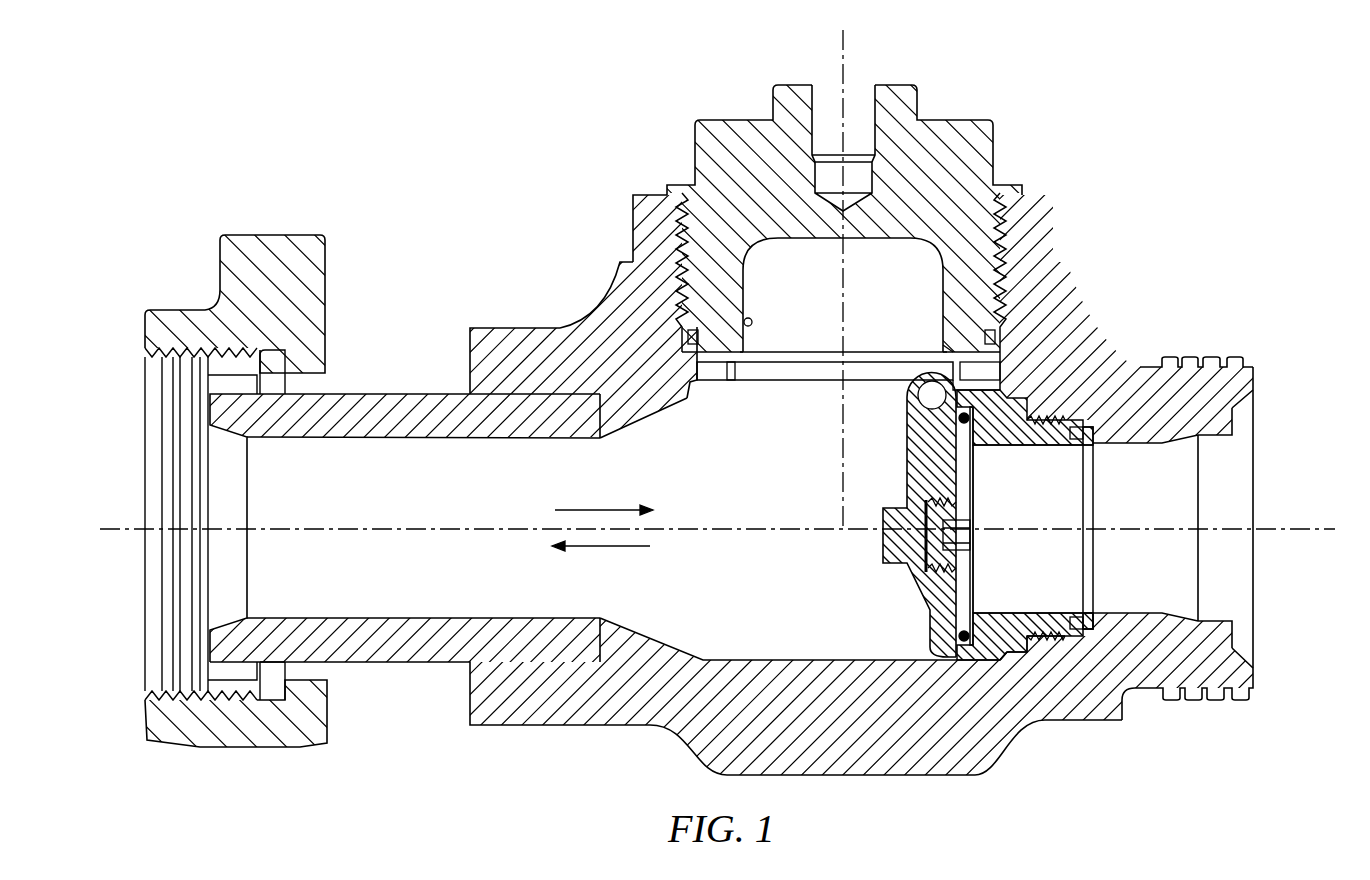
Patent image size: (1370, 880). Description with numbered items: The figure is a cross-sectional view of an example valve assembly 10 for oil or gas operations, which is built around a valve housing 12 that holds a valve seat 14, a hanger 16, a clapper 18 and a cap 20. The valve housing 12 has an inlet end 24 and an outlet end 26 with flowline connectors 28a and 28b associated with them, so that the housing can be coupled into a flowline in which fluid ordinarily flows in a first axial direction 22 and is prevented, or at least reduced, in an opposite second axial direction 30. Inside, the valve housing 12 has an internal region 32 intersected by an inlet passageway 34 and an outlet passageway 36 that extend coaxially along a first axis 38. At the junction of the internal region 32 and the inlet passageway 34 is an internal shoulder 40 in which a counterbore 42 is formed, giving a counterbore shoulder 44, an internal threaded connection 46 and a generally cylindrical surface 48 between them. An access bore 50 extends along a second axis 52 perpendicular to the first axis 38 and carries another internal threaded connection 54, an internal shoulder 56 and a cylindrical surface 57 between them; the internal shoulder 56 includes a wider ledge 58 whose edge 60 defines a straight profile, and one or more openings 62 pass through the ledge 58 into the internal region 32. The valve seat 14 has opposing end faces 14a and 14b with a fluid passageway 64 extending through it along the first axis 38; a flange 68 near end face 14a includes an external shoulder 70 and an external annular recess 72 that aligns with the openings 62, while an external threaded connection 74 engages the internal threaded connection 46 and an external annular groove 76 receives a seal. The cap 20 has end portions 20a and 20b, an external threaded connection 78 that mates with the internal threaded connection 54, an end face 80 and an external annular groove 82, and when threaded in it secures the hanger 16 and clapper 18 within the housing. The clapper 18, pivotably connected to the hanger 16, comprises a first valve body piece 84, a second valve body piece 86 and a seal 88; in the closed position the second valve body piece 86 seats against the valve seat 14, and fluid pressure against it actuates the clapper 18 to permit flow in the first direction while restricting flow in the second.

The valve assembly 10 is at (298, 123).
The valve housing 12 is at (570, 728).
The valve seat 14 is at (1035, 612).
The end face 14a is at (962, 648).
The end face 14b is at (1098, 435).
The hanger 16 is at (750, 380).
The clapper 18 is at (880, 572).
The cap 20 is at (996, 150).
The end portion 20a is at (738, 119).
The end portion 20b is at (622, 320).
The first axial direction 22 is at (623, 551).
The inlet end 24 is at (1147, 705).
The outlet end 26 is at (380, 665).
The flowline connector 28a is at (1210, 360).
The flowline connector 28b is at (212, 310).
The second axial direction 30 is at (583, 507).
The internal region 32 is at (778, 529).
The inlet passageway 34 is at (1162, 528).
The outlet passageway 36 is at (423, 527).
The first axis 38 is at (355, 530).
The internal shoulder 40 is at (1014, 612).
The counterbore 42 is at (1048, 612).
The counterbore shoulder 44 is at (1086, 616).
The internal threaded connection 46 is at (1032, 447).
The cylindrical surface 48 is at (1060, 444).
The access bore 50 is at (843, 295).
The second axis 52 is at (850, 55).
The internal threaded connection 54 is at (700, 205).
The internal shoulder 56 is at (700, 410).
The cylindrical surface 57 is at (753, 322).
The ledge 58 is at (998, 372).
The edge 60 is at (946, 356).
The openings 62 is at (988, 334).
The fluid passageway 64 is at (1008, 529).
The flange 68 is at (1006, 664).
The external shoulder 70 is at (1030, 660).
The external annular recess 72 is at (966, 665).
The external threaded connection 74 is at (1058, 637).
The external annular groove 76 is at (1078, 426).
The external threaded connection 78 is at (632, 232).
The end face 80 is at (731, 381).
The external annular groove 82 is at (680, 368).
The first valve body piece 84 is at (912, 592).
The second valve body piece 86 is at (948, 472).
The seal 88 is at (960, 418).